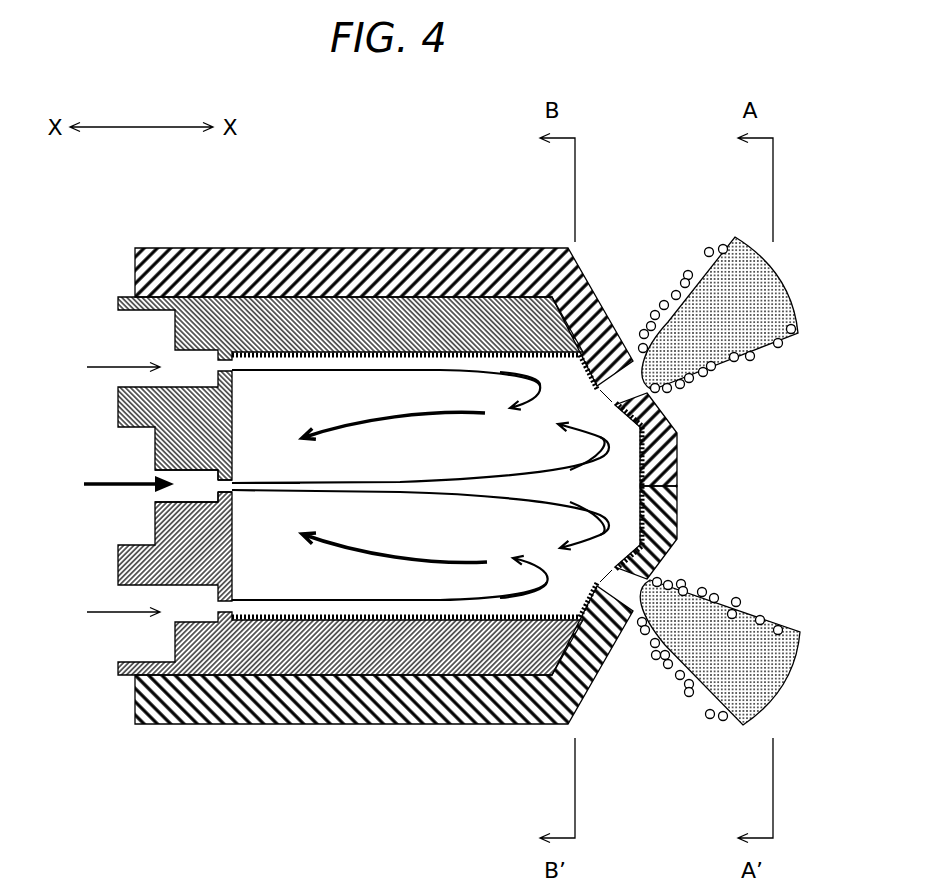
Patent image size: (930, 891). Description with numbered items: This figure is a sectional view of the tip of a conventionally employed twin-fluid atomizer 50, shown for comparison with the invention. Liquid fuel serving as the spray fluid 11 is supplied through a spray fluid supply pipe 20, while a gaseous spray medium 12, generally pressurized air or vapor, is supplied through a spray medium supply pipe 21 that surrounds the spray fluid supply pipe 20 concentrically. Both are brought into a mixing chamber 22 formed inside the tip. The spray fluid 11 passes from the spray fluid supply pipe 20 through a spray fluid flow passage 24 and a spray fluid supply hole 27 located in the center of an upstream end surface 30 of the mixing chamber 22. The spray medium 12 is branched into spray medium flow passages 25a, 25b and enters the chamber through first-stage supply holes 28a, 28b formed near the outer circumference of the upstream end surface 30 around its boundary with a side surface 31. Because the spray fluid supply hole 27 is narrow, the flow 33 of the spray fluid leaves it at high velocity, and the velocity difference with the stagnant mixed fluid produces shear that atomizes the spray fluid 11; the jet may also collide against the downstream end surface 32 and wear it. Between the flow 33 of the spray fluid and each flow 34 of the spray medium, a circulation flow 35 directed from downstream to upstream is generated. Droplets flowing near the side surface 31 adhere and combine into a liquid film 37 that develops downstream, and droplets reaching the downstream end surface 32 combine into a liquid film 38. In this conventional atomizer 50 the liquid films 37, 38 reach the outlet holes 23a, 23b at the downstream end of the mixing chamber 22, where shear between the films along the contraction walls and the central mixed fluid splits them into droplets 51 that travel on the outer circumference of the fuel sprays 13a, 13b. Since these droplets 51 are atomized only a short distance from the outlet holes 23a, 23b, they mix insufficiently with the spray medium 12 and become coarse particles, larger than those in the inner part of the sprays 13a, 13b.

The spray fluid 11 is at (100, 482).
The spray medium 12 is at (108, 365).
The fuel spray 13a is at (697, 273).
The fuel spray 13b is at (692, 705).
The spray fluid supply pipe 20 is at (146, 467).
The spray medium supply pipe 21 is at (148, 345).
The mixing chamber 22 is at (331, 412).
The outlet hole 23a is at (652, 388).
The outlet hole 23b is at (656, 584).
The spray fluid flow passage 24 is at (203, 483).
The spray medium flow passage 25a is at (187, 376).
The spray medium flow passage 25b is at (197, 593).
The spray fluid supply hole 27 is at (234, 473).
The first-stage supply hole 28a is at (233, 370).
The first-stage supply hole 28b is at (233, 593).
The upstream end surface 30 is at (236, 539).
The side surface 31 is at (350, 353).
The downstream end surface 32 is at (624, 438).
The flow of the spray fluid 33 is at (386, 481).
The flow of the spray medium 34 is at (410, 371).
The circulation flow 35 is at (452, 416).
The liquid film 37 is at (523, 370).
The liquid film 38 is at (638, 497).
The atomizer 50 is at (680, 487).
The droplets 51 is at (654, 312).